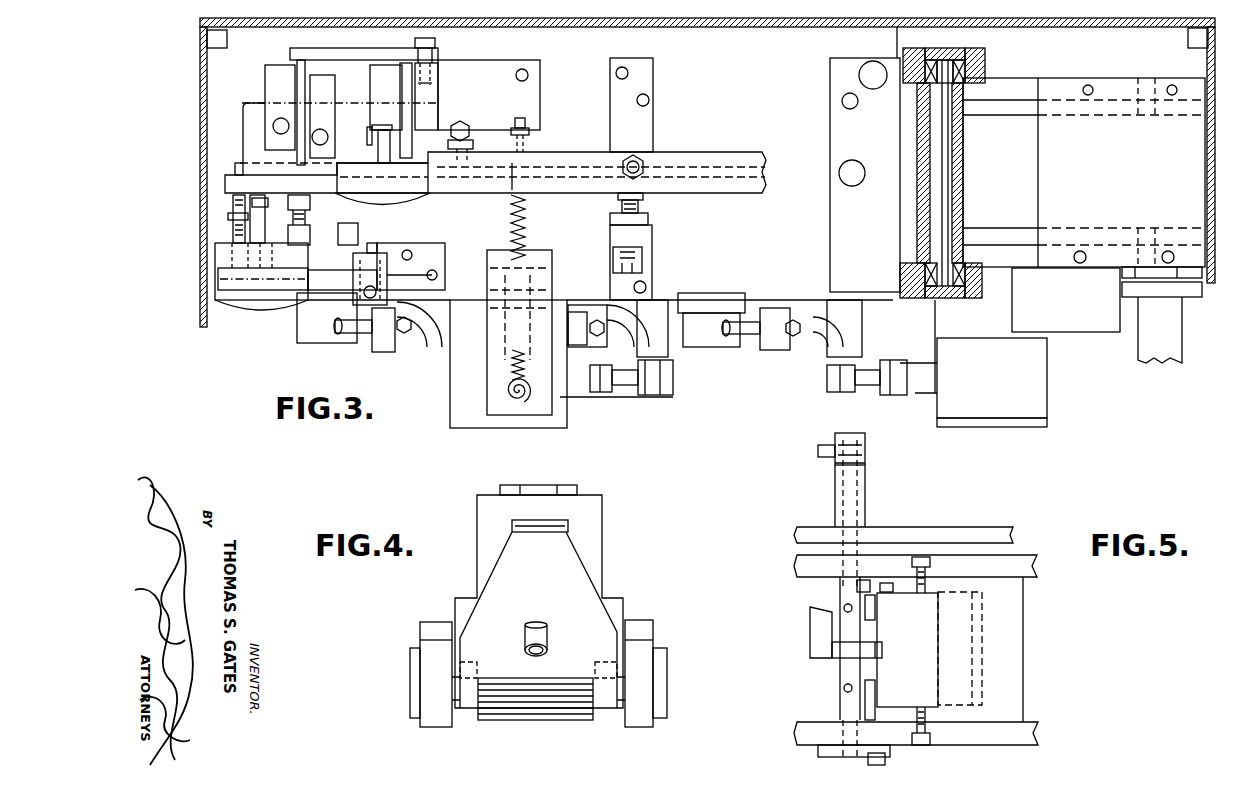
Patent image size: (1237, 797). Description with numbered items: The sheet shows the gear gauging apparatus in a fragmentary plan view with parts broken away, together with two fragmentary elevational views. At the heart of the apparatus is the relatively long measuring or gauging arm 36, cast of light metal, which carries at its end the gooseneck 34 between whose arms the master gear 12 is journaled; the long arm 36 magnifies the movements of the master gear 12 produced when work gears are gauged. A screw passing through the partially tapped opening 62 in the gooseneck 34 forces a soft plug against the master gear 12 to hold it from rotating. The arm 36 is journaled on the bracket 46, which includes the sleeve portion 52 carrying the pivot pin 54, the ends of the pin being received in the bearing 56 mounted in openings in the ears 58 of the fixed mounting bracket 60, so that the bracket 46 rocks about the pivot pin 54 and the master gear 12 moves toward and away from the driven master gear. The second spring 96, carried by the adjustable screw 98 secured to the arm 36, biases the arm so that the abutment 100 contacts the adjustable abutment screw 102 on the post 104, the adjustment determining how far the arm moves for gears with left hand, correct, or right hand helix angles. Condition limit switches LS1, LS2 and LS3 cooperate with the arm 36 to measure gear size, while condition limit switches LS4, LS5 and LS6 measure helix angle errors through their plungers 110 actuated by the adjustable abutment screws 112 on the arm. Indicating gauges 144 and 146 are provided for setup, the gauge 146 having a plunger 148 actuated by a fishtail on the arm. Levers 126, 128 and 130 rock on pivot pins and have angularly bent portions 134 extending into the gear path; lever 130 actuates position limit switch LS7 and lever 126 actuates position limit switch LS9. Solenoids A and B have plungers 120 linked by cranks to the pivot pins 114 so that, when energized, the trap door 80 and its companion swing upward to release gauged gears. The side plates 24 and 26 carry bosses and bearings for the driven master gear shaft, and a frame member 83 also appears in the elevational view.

In FIG. 3, the condition limit switch LS1 is at (265, 84).
In FIG. 3, the condition limit switch LS2 is at (325, 76).
In FIG. 3, the condition limit switch LS3 is at (390, 80).
In FIG. 3, the condition limit switch LS4 is at (255, 231).
In FIG. 3, the condition limit switch LS5 is at (334, 230).
In FIG. 3, the condition limit switch LS6 is at (366, 236).
In FIG. 3, the position limit switch LS7 is at (706, 338).
In FIG. 3, the position limit switch LS9 is at (300, 333).
In FIG. 3, the adjustable screw 98 is at (527, 128).
In FIG. 3, the second spring 96 is at (526, 240).
In FIG. 3, the abutment 100 is at (618, 204).
In FIG. 3, the adjustable abutment screw 102 is at (610, 220).
In FIG. 3, the post 104 is at (652, 240).
In FIG. 3, the measuring or gauging arm 36 is at (698, 194).
In FIG. 3, the fixed mounting bracket 60 is at (830, 113).
In FIG. 3, the bearing 56 is at (925, 58).
In FIG. 3, the ears 58 is at (985, 72).
In FIG. 3, the sleeve portion 52 is at (963, 167).
In FIG. 3, the pivot pin 54 is at (946, 206).
In FIG. 3, the adjustable abutment screws 112 is at (327, 200).
In FIG. 3, the plungers 110 is at (350, 205).
In FIG. 3, the indicating gauge 144 is at (429, 195).
In FIG. 3, the plunger 148 is at (240, 227).
In FIG. 3, the indicating gauge 146 is at (244, 306).
In FIG. 3, the lever 126 is at (422, 340).
In FIG. 3, the lever 128 is at (610, 308).
In FIG. 3, the plungers 120 is at (578, 392).
In FIG. 3, the lever 130 is at (812, 338).
In FIG. 5, the lever 130 is at (812, 634).
In FIG. 3, the solenoid B is at (455, 404).
In FIG. 3, the solenoid A is at (1040, 403).
In FIG. 4, the bracket 46 is at (602, 526).
In FIG. 4, the gooseneck 34 is at (566, 566).
In FIG. 4, the partially tapped opening 62 is at (548, 640).
In FIG. 4, the master gear 12 is at (560, 718).
In FIG. 5, the pivot pins 114 is at (857, 498).
In FIG. 5, the side plate 24 is at (1023, 566).
In FIG. 5, the frame 83 is at (1023, 646).
In FIG. 5, the side plate 26 is at (1034, 735).
In FIG. 5, the trap door 80 is at (916, 644).
In FIG. 5, the angularly bent portions 134 is at (879, 658).